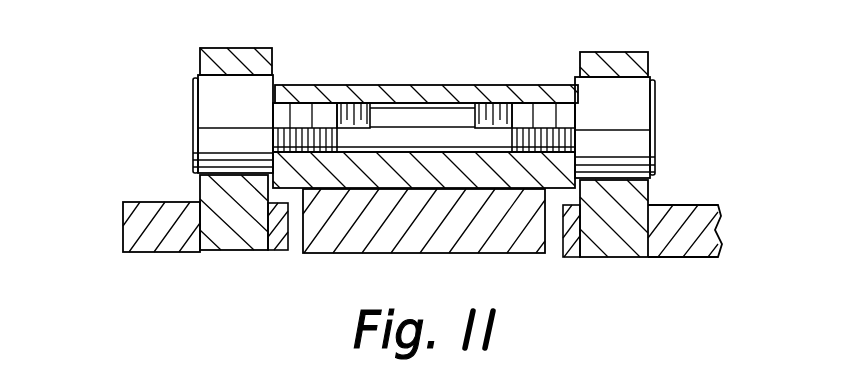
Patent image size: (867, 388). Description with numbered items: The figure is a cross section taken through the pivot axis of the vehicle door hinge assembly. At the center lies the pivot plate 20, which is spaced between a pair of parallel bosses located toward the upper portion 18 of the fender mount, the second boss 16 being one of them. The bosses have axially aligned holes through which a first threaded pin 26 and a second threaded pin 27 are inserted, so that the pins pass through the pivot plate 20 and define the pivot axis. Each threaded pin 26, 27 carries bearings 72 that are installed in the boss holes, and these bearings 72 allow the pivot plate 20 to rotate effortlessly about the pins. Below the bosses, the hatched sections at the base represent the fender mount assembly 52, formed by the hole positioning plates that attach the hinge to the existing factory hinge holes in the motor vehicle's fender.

The second boss 16 is at (200, 70).
The upper portion 18 is at (650, 60).
The pivot plate 20 is at (367, 85).
The first threaded pin 26 is at (193, 133).
The second threaded pin 27 is at (620, 115).
The bearings 72 is at (427, 133).
The fender mount assembly 52 is at (180, 253).